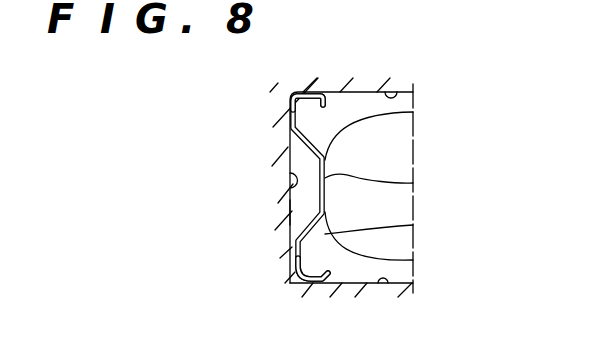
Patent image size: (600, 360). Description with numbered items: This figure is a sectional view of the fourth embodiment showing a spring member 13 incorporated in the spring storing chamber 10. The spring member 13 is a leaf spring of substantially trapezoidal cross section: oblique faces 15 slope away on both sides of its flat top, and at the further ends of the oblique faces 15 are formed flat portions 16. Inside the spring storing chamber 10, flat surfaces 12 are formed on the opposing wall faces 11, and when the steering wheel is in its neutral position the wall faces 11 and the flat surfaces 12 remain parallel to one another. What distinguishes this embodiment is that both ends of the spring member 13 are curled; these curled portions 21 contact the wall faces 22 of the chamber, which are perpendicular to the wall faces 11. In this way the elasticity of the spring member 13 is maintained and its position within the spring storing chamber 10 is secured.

The spring storing chamber 10 is at (350, 285).
The wall face 11 is at (290, 189).
The flat surface 12 is at (413, 183).
The spring member 13 is at (308, 152).
The oblique face 15 is at (322, 152).
The flat portion 16 is at (318, 197).
The curled portion 21 is at (303, 93).
The wall face 22 is at (397, 92).